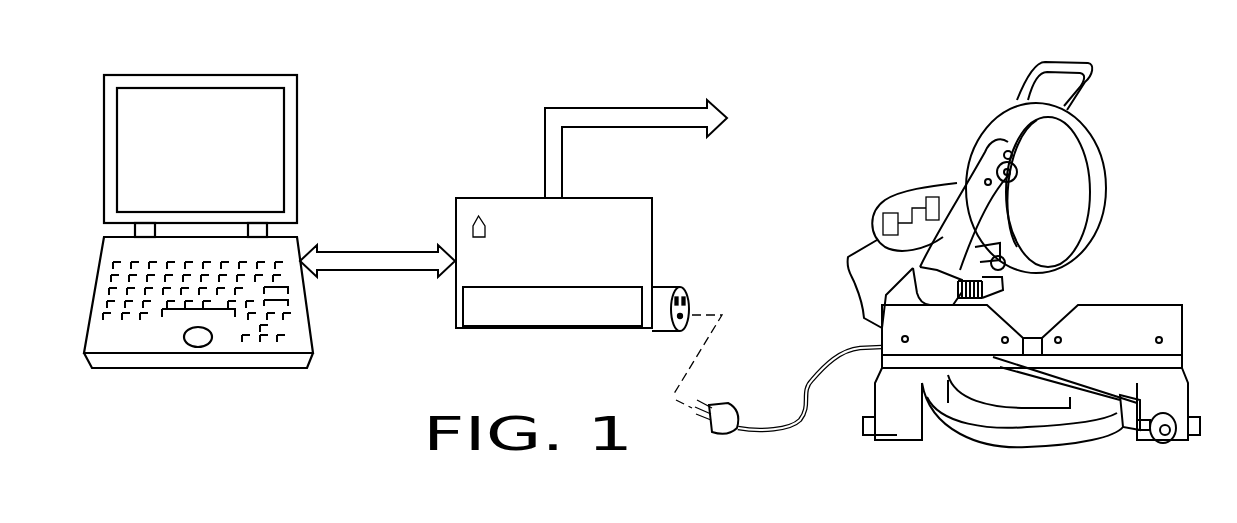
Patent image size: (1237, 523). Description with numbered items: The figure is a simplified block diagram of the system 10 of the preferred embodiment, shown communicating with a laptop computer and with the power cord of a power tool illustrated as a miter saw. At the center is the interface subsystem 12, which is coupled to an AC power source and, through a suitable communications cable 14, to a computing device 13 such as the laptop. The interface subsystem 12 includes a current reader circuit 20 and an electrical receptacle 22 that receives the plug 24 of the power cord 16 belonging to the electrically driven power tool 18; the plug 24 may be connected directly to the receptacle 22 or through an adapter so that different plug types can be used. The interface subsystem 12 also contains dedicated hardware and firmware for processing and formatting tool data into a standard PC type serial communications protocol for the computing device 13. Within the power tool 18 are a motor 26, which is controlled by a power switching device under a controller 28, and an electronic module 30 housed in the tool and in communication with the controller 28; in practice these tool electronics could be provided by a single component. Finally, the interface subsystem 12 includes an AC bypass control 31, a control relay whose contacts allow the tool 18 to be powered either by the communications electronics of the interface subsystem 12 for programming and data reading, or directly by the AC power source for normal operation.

The system 10 is at (495, 170).
The interface subsystem 12 is at (660, 217).
The computing device 13 is at (285, 122).
The communications cable 14 is at (367, 265).
The power cord 16 is at (760, 433).
The power tool 18 is at (1122, 171).
The current reader circuit 20 is at (492, 326).
The electrical receptacle 22 is at (664, 293).
The plug 24 is at (727, 415).
The motor 26 is at (910, 197).
The controller 28 is at (883, 216).
The electronic module 30 is at (937, 200).
The AC bypass control 31 is at (472, 227).